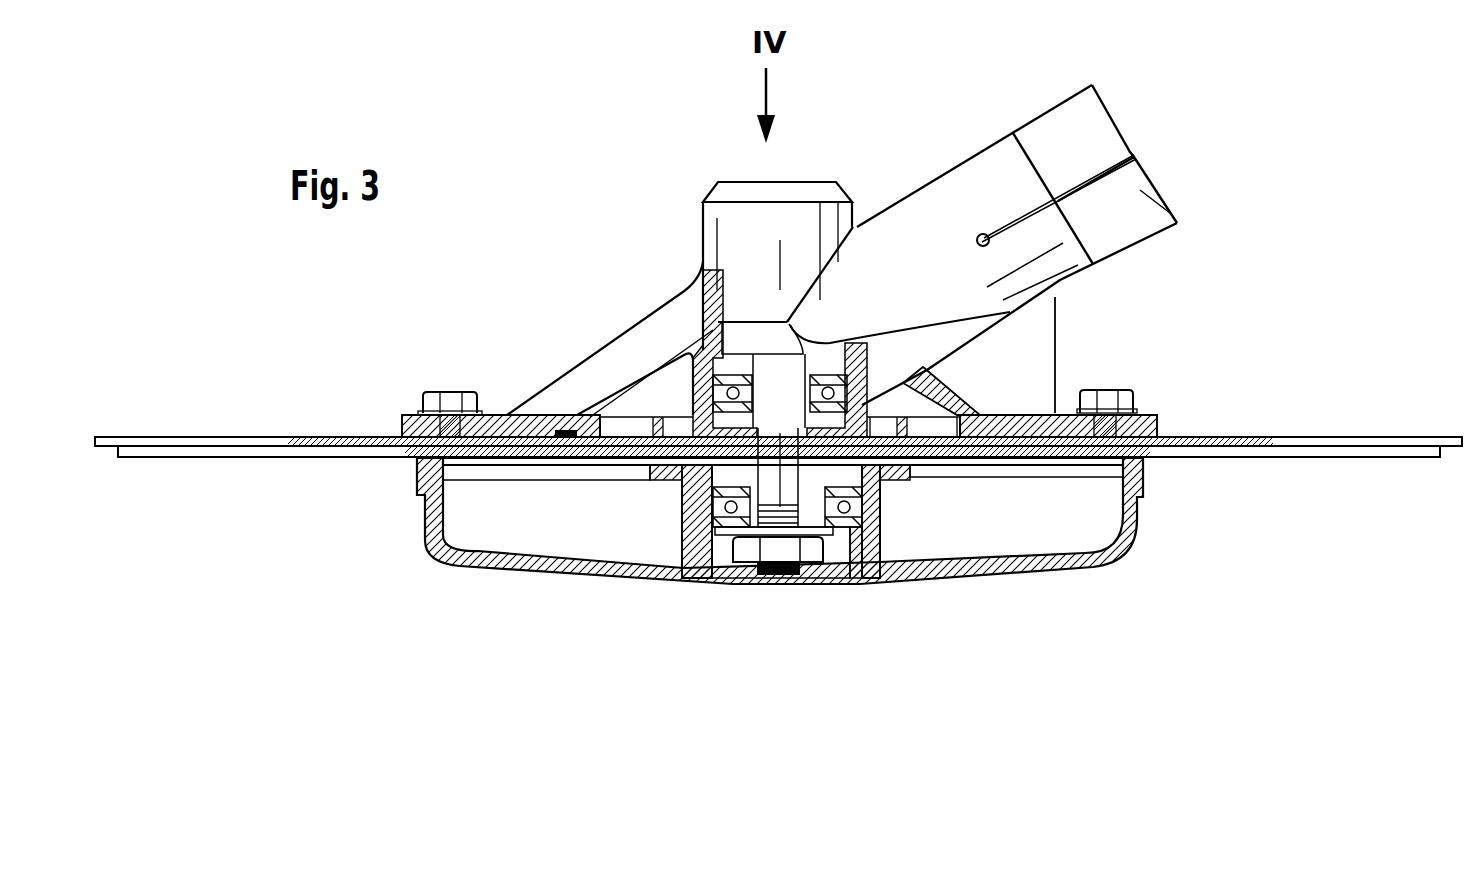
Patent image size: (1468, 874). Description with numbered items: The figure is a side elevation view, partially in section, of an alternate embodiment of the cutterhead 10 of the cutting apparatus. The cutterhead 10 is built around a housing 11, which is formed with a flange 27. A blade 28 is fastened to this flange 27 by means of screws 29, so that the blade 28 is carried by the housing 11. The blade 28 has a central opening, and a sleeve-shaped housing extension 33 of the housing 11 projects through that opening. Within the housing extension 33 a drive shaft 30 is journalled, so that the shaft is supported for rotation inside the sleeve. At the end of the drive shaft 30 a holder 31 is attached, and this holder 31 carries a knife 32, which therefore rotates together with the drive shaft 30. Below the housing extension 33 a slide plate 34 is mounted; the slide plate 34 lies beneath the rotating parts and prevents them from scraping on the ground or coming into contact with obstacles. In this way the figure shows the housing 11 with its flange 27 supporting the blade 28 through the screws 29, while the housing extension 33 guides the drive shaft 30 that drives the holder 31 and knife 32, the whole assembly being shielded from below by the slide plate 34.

The cutterhead 10 is at (666, 260).
The housing 11 is at (899, 222).
The flange 27 is at (1027, 413).
The blade 28 is at (1297, 438).
The screws 29 is at (1110, 392).
The drive shaft 30 is at (778, 535).
The holder 31 is at (897, 473).
The knife 32 is at (1245, 448).
The housing extension 33 is at (980, 402).
The slide plate 34 is at (993, 567).